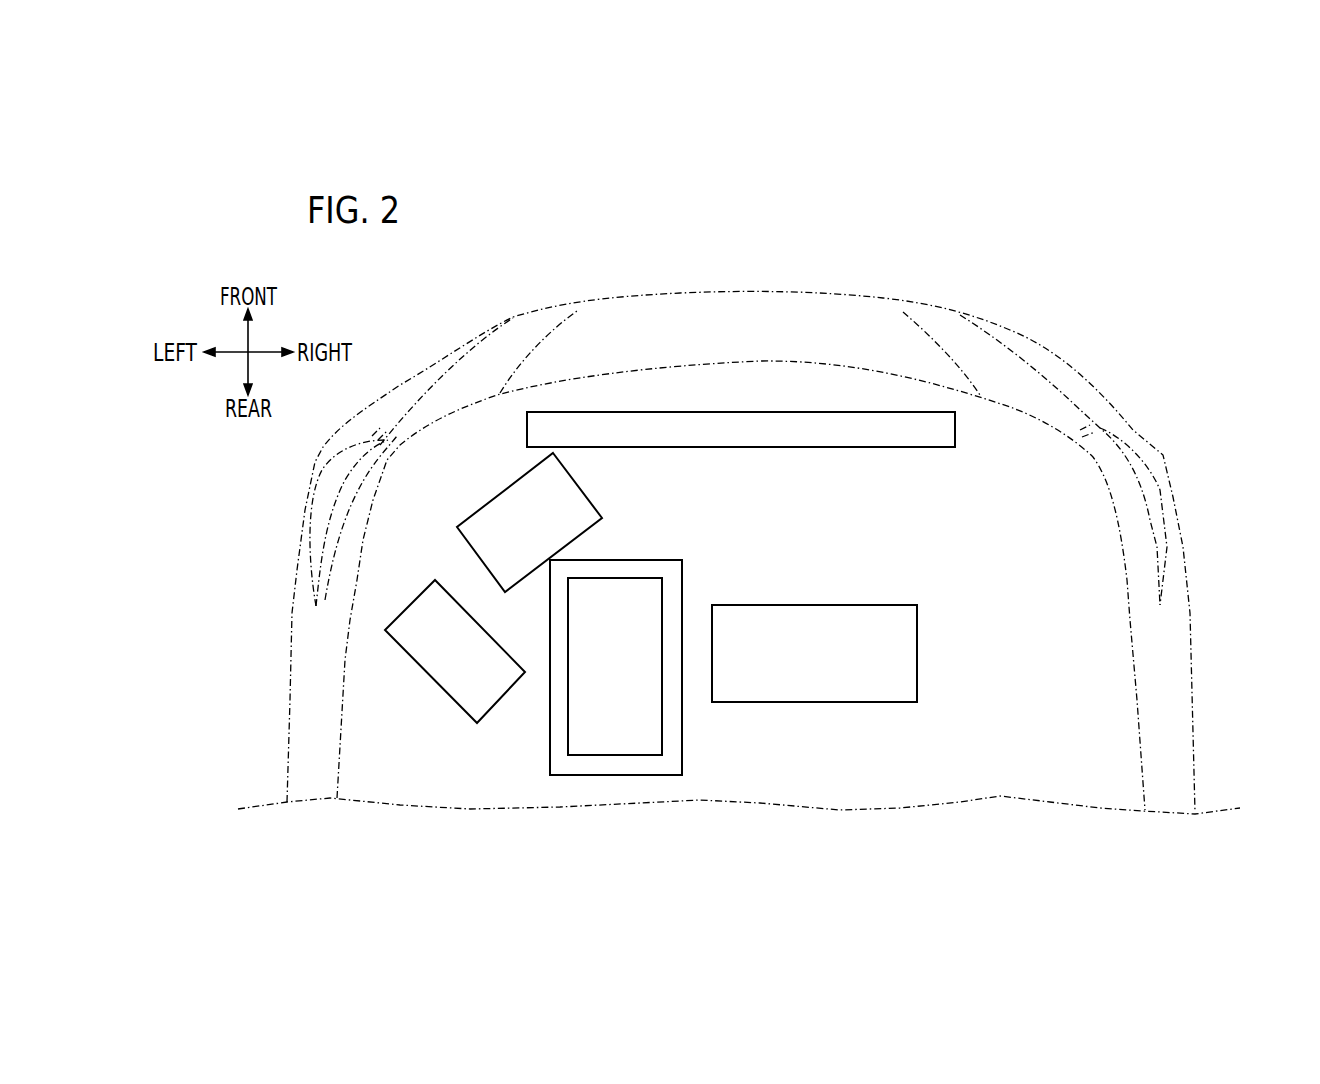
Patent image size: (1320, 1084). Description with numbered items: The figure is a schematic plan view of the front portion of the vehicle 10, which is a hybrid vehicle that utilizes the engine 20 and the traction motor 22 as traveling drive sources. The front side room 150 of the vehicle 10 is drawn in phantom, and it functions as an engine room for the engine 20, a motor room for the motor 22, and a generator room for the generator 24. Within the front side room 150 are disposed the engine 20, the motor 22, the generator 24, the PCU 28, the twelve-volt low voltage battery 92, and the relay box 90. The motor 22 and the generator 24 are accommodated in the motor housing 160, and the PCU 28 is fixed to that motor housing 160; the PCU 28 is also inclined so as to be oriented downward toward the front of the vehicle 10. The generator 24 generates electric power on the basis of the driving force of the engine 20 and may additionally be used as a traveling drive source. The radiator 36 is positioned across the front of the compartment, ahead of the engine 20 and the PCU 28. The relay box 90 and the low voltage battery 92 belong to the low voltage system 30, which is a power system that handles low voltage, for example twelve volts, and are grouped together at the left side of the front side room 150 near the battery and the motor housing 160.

The vehicle 10 is at (387, 276).
The engine 20 is at (856, 605).
The traction motor 22 is at (616, 667).
The generator 24 is at (616, 667).
The PCU 28 is at (631, 578).
The low voltage system 30 is at (236, 465).
The radiator 36 is at (750, 448).
The relay box 90 is at (407, 604).
The low voltage battery 92 is at (477, 512).
The front side room 150 is at (996, 537).
The motor housing 160 is at (683, 565).